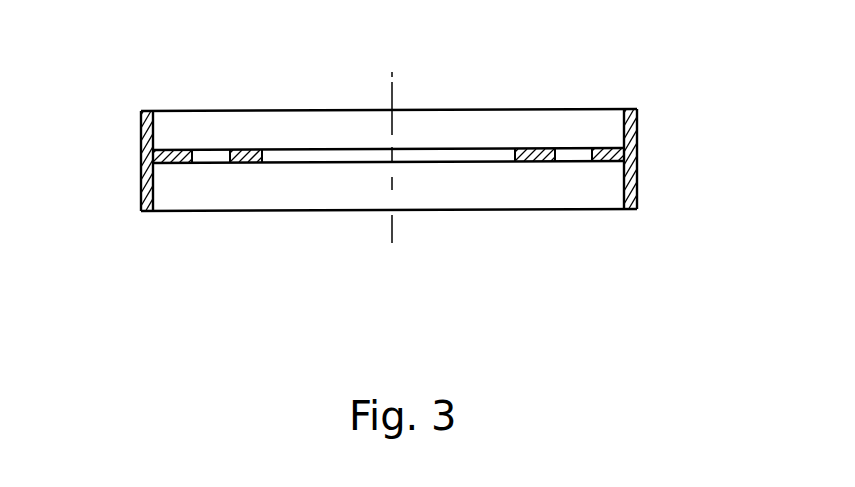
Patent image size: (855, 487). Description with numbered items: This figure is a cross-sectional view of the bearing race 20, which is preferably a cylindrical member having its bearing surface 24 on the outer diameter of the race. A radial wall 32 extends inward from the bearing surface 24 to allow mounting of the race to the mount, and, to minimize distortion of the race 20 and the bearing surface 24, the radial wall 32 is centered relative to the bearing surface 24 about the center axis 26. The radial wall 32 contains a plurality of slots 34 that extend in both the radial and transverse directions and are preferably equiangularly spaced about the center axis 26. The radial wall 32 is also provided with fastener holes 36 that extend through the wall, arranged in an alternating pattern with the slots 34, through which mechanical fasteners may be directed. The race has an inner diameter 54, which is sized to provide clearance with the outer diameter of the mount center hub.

The bearing race 20 is at (143, 77).
The bearing surface 24 is at (637, 145).
The center axis 26 is at (392, 158).
The radial wall 32 is at (245, 150).
The slots 34 is at (213, 150).
The fastener holes 36 is at (572, 148).
The inner diameter 54 is at (153, 192).